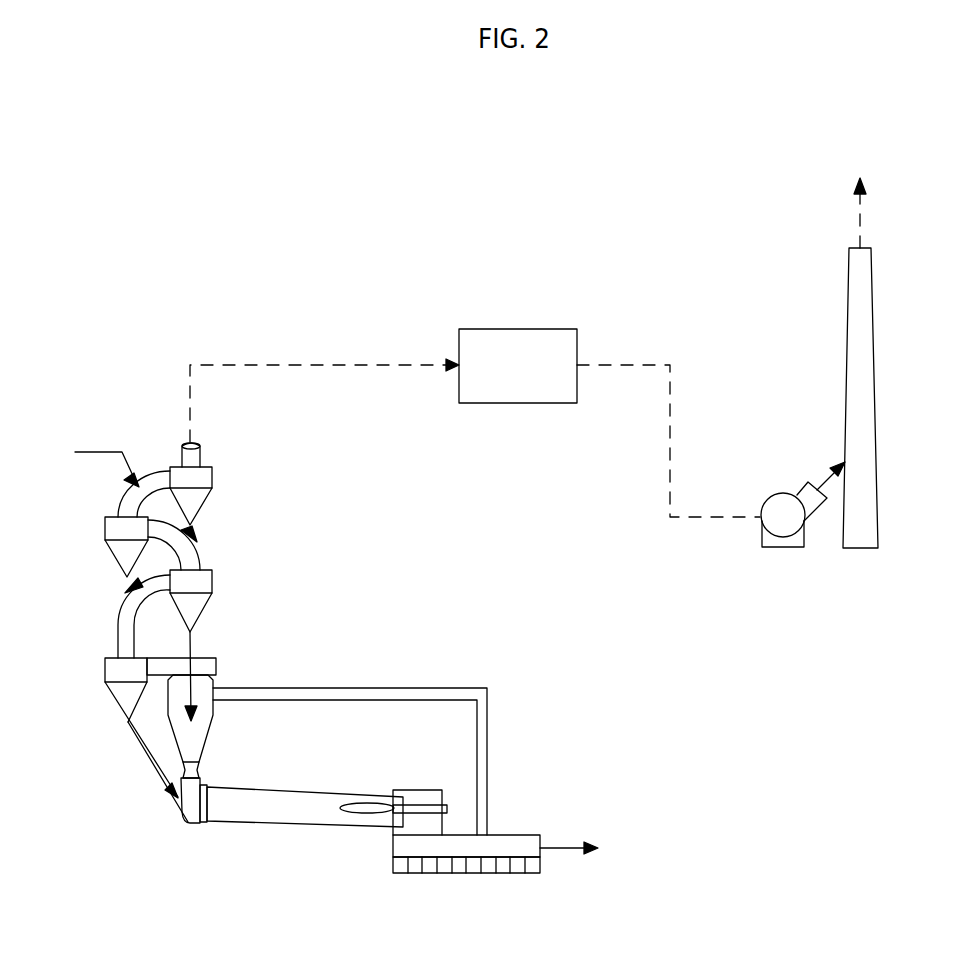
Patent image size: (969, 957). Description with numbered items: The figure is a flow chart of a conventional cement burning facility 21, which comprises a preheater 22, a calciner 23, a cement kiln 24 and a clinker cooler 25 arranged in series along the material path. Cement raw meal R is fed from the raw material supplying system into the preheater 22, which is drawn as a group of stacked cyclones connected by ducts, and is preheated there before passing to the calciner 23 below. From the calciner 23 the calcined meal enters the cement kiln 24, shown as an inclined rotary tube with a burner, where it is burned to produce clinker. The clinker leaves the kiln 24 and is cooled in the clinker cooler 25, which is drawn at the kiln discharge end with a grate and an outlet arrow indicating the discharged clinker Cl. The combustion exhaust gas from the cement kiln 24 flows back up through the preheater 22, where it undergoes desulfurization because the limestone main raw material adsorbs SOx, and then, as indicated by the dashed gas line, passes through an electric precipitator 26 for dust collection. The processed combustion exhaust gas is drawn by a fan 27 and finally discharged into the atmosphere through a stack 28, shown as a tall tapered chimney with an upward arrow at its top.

The cement burning facility 21 is at (332, 615).
The preheater 22 is at (88, 482).
The calciner 23 is at (210, 724).
The cement kiln 24 is at (317, 827).
The clinker cooler 25 is at (505, 835).
The electric precipitator 26 is at (515, 329).
The fan 27 is at (770, 495).
The stack 28 is at (847, 377).
The cement raw meal R is at (107, 458).
The clinker Cl is at (569, 834).